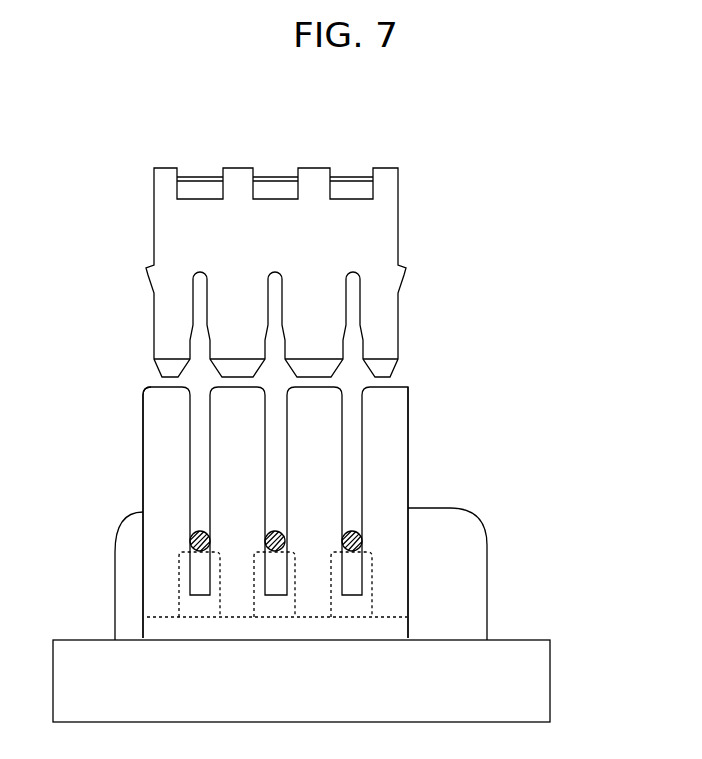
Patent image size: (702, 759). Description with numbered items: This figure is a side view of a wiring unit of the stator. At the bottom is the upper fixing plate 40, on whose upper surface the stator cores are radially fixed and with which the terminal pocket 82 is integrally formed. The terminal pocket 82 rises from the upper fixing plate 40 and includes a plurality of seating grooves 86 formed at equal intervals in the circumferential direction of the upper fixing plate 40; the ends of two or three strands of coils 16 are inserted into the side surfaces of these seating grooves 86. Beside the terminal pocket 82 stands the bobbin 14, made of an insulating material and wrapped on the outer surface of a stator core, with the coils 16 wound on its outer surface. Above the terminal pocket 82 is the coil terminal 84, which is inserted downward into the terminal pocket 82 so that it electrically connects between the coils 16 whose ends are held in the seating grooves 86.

The coil terminal 84 is at (372, 242).
The terminal pocket 82 is at (388, 447).
The seating grooves 86 is at (280, 465).
The coils 16 is at (274, 535).
The bobbin 14 is at (452, 582).
The upper fixing plate 40 is at (537, 682).